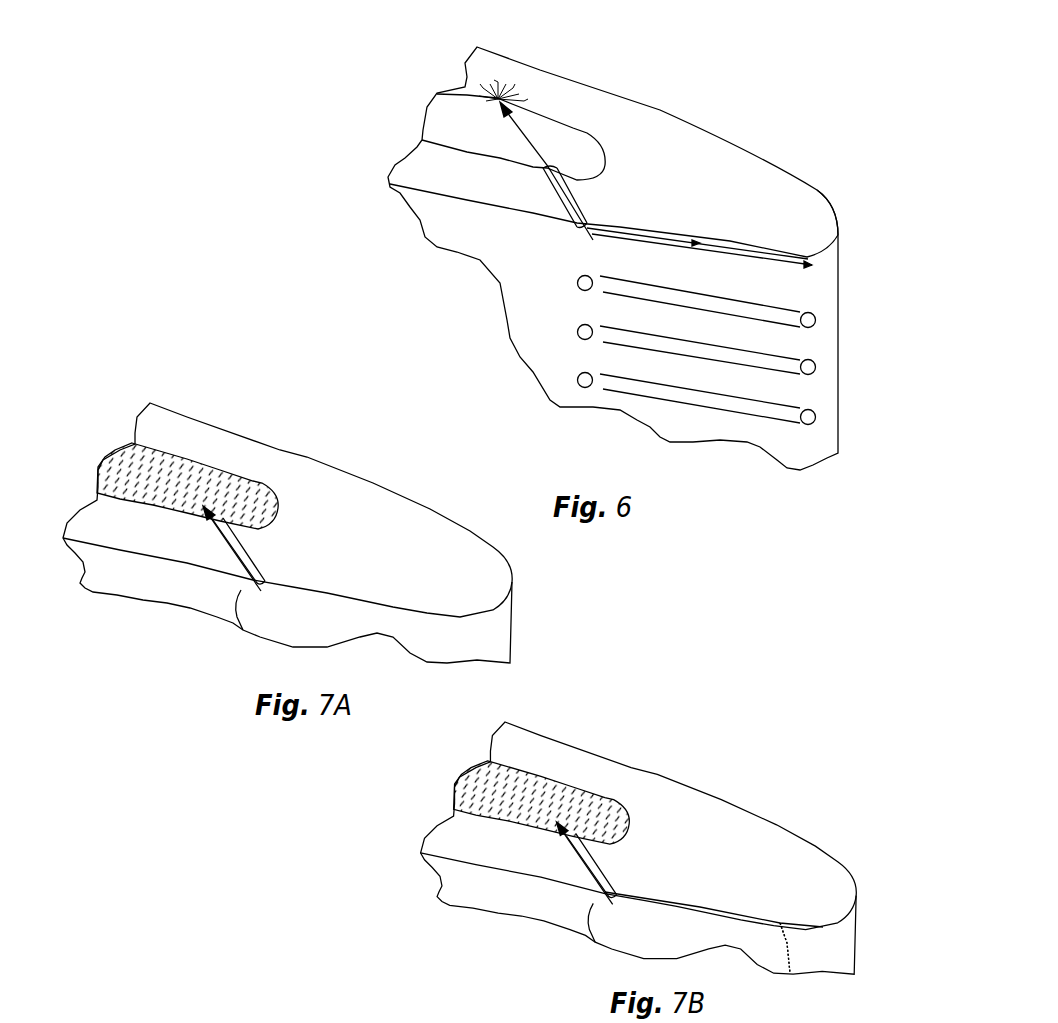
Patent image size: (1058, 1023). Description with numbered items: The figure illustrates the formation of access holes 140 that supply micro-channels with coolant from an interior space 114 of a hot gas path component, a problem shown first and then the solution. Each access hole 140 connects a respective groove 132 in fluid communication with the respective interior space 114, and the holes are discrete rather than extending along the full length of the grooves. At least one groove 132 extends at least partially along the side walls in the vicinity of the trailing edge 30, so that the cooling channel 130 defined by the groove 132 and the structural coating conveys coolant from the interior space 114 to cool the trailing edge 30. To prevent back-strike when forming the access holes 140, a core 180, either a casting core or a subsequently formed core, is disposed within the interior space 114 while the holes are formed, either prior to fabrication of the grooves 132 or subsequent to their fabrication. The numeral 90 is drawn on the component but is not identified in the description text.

In FIG. 6, the trailing edge 30 is at (840, 229).
In FIG. 6, the body 90 is at (828, 343).
In FIG. 7A, the body 90 is at (308, 457).
In FIG. 7B, the body 90 is at (639, 847).
In FIG. 6, the interior space 114 is at (575, 133).
In FIG. 6, the cooling channel 130 is at (667, 398).
In FIG. 7B, the cooling channel 130 is at (790, 973).
In FIG. 7B, the groove 132 is at (804, 988).
In FIG. 6, the access hole 140 is at (560, 200).
In FIG. 7A, the access hole 140 is at (244, 631).
In FIG. 7B, the access hole 140 is at (586, 896).
In FIG. 7A, the core 180 is at (97, 487).
In FIG. 7B, the core 180 is at (505, 802).